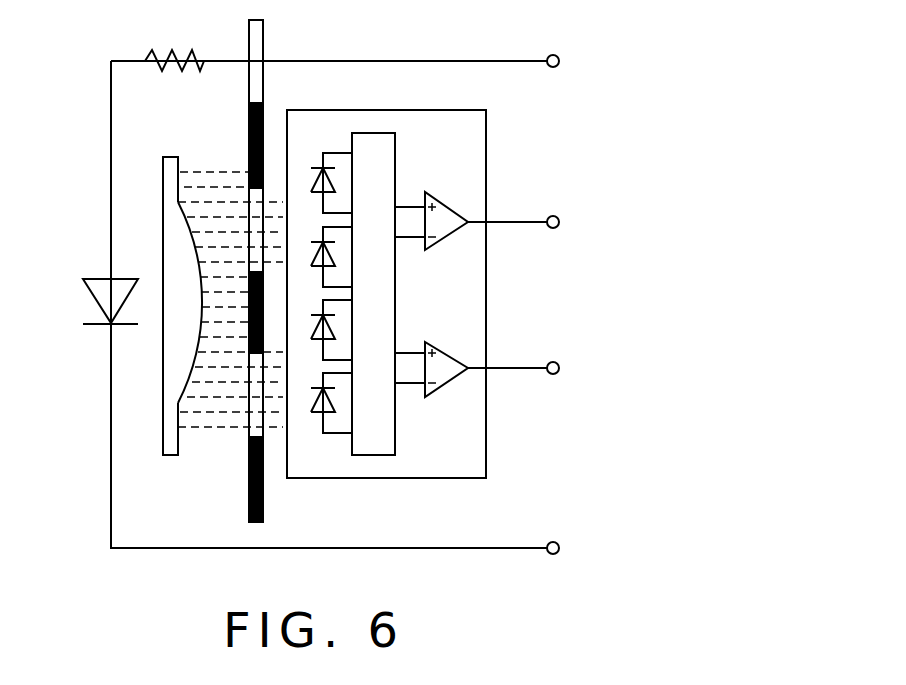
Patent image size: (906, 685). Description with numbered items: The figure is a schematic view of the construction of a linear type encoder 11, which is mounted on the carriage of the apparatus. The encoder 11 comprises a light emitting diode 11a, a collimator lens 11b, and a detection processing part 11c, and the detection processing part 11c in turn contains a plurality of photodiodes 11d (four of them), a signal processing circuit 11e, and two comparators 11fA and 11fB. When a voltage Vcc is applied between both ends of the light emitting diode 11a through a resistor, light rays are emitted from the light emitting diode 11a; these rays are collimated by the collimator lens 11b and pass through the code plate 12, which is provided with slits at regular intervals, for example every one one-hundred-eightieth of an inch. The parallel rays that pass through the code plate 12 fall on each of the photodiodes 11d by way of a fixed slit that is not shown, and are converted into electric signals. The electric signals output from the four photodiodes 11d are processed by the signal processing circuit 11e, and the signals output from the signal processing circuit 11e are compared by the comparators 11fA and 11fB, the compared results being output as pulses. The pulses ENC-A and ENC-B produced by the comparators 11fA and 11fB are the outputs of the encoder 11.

The linear type encoder 11 is at (162, 40).
The code plate 12 is at (262, 37).
The light emitting diode 11a is at (99, 284).
The collimator lens 11b is at (168, 162).
The detection processing part 11c is at (360, 478).
The photodiodes 11d is at (316, 190).
The signal processing circuit 11e is at (368, 133).
The comparator 11fA is at (443, 213).
The comparator 11fB is at (443, 363).